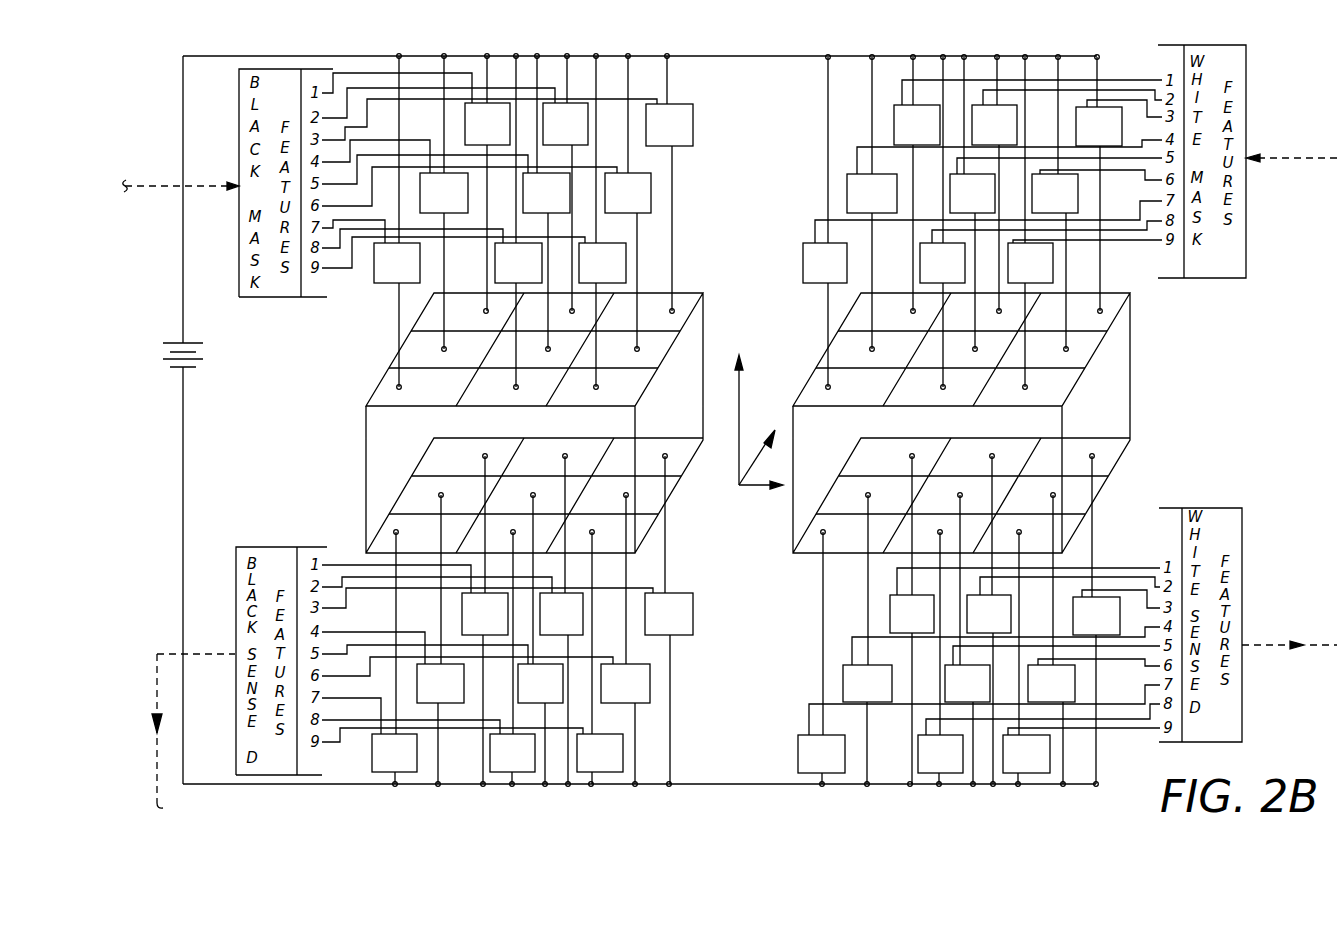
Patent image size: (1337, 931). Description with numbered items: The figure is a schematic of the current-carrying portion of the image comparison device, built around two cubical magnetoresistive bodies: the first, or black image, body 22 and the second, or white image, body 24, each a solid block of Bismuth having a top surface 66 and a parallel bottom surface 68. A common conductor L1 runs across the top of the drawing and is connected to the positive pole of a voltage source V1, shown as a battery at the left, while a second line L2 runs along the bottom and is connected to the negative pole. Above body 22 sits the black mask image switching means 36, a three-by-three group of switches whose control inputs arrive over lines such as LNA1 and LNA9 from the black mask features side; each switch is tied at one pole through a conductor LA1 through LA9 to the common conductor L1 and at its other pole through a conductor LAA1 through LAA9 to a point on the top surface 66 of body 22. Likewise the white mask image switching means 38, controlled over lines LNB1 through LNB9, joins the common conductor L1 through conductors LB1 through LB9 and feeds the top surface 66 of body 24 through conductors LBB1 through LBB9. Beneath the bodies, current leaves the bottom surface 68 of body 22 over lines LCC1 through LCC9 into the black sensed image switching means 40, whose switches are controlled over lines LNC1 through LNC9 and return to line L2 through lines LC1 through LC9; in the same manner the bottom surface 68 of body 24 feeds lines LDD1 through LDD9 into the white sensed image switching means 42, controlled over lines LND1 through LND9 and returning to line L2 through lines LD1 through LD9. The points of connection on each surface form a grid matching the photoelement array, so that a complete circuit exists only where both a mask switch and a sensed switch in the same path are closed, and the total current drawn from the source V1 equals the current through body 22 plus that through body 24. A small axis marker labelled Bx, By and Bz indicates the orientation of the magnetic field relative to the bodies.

The first (black image) magnetoresistive body 22 is at (356, 408).
The second (white image) magnetoresistive body 24 is at (1140, 408).
The black mask image switching means 36 is at (556, 51).
The white mask image switching means 38 is at (977, 51).
The black sensed image switching means 40 is at (541, 811).
The white sensed image switching means 42 is at (974, 811).
The top surface 66 is at (833, 343).
The bottom surface 68 is at (792, 536).
The common conductor L1 is at (760, 57).
The line L2 is at (760, 784).
The voltage source V1 is at (195, 420).
The electrical conductor LA1 is at (487, 66).
The electrical conductor LA9 is at (596, 68).
The electrical conductor LB1 is at (913, 71).
The electrical conductor LB9 is at (1026, 65).
The line LC1 is at (482, 768).
The line LC9 is at (592, 777).
The line LD1 is at (908, 773).
The line LD9 is at (1018, 787).
The control line LNA1 is at (347, 73).
The control line LNA9 is at (338, 270).
The control line LNB1 is at (1120, 80).
The control line LNB9 is at (1113, 241).
The line LNC1 is at (358, 563).
The line LNC9 is at (329, 742).
The line LND1 is at (1141, 561).
The line LND9 is at (1112, 730).
The electrical conductor LAA1 is at (468, 270).
The electrical conductor LAA9 is at (597, 293).
The electrical conductor LBB1 is at (913, 277).
The electrical conductor LBB9 is at (1030, 358).
The line LCC1 is at (483, 482).
The line LCC9 is at (593, 571).
The line LDD1 is at (898, 582).
The line LDD9 is at (1022, 542).
The magnetic field x-axis Bx is at (757, 448).
The magnetic field y-axis By is at (761, 498).
The magnetic field z-axis Bz is at (745, 408).